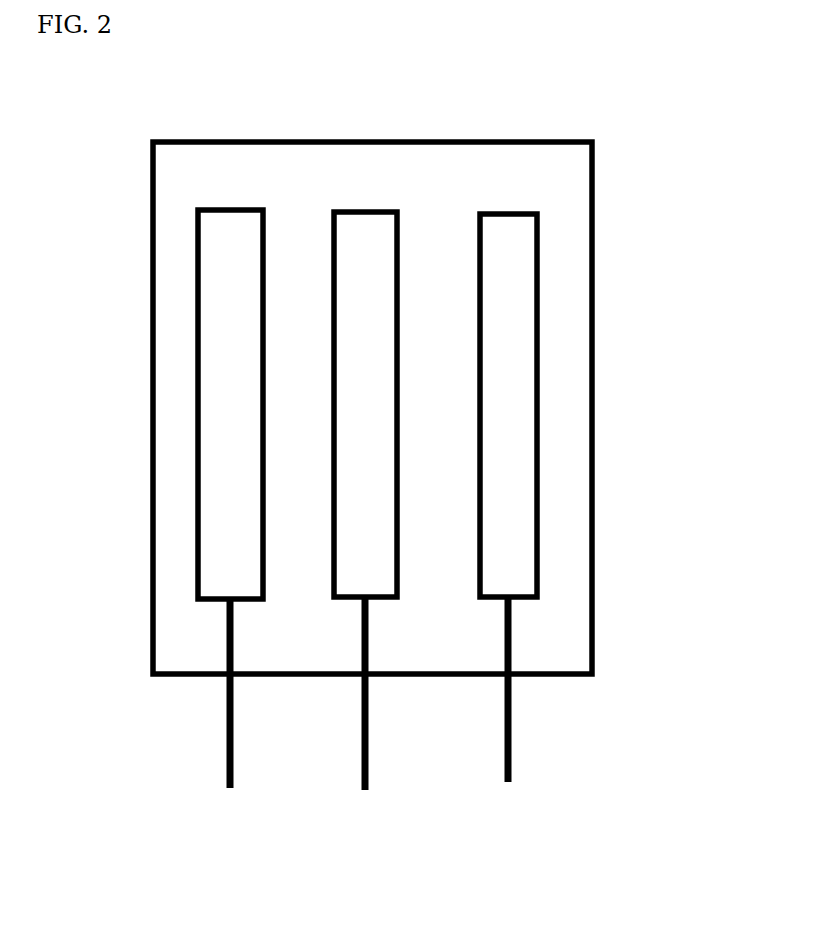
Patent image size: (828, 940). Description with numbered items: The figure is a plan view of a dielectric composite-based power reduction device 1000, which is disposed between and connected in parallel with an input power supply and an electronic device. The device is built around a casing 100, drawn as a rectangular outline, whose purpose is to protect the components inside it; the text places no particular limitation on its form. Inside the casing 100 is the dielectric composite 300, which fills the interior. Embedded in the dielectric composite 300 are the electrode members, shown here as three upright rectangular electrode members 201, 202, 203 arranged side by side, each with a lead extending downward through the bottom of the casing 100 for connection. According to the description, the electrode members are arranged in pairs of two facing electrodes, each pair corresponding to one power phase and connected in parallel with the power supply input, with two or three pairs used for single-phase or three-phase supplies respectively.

The dielectric composite-based power reduction device 1000 is at (376, 438).
The casing 100 is at (592, 280).
The dielectric composite 300 is at (173, 245).
The electrode member 201 is at (230, 480).
The electrode member 202 is at (365, 483).
The electrode member 203 is at (507, 480).